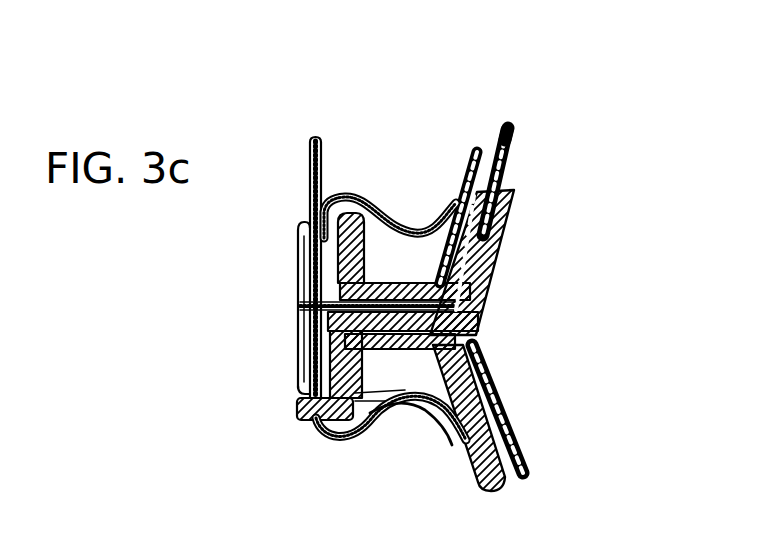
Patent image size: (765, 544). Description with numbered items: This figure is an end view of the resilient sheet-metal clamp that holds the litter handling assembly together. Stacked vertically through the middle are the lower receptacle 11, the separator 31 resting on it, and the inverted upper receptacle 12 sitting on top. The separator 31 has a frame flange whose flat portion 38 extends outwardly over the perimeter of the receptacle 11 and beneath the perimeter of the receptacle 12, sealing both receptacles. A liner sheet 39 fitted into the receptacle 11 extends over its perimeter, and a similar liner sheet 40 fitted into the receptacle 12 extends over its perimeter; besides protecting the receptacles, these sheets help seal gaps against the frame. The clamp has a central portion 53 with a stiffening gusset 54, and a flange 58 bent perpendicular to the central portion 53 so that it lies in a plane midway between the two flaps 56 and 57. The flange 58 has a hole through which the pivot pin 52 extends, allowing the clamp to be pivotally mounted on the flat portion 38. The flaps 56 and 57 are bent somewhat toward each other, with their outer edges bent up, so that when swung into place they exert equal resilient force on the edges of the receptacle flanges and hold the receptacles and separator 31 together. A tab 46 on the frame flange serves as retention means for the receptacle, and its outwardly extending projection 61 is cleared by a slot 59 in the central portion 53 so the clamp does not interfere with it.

The first receptacle 11 is at (500, 497).
The second receptacle 12 is at (493, 188).
The separator 31 is at (502, 250).
The flat portion 38 is at (394, 349).
The liner sheet 39 is at (517, 443).
The liner sheet 40 is at (519, 143).
The tab 46 is at (368, 430).
The pivot pin 52 is at (400, 291).
The central portion 53 is at (300, 309).
The stiffening gusset 54 is at (300, 237).
The flap 56 is at (404, 214).
The flap 57 is at (412, 413).
The flange 58 is at (304, 282).
The slot 59 is at (294, 384).
The projection 61 is at (300, 421).